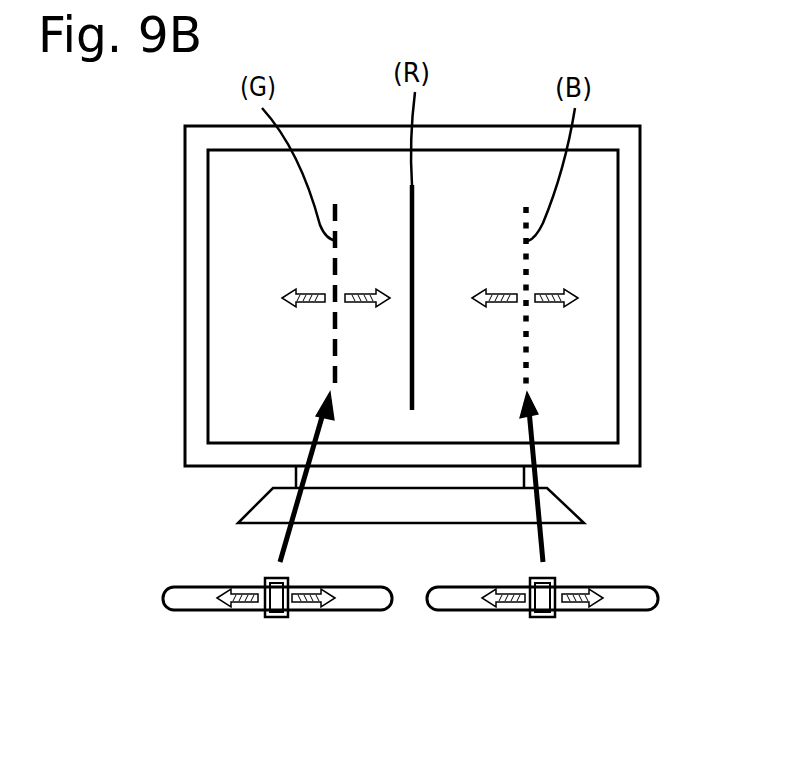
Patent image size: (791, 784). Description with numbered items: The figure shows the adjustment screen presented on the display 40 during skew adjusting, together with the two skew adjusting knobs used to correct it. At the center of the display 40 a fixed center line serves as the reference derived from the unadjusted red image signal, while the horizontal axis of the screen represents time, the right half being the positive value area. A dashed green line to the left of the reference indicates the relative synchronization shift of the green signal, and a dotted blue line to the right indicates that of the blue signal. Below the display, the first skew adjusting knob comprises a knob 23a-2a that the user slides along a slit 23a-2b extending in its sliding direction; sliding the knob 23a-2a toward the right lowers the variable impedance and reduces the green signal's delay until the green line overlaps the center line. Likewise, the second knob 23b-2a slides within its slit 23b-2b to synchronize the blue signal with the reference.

The display 40 is at (641, 300).
The slit 23a-2b is at (203, 610).
The knob 23a-2a is at (275, 617).
The slit 23b-2b is at (620, 610).
The knob 23b-2a is at (542, 617).